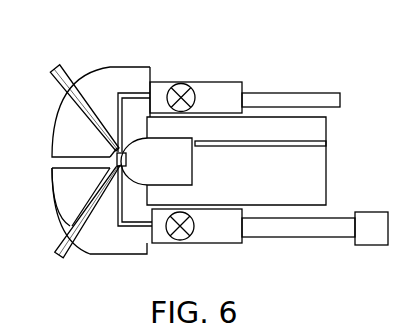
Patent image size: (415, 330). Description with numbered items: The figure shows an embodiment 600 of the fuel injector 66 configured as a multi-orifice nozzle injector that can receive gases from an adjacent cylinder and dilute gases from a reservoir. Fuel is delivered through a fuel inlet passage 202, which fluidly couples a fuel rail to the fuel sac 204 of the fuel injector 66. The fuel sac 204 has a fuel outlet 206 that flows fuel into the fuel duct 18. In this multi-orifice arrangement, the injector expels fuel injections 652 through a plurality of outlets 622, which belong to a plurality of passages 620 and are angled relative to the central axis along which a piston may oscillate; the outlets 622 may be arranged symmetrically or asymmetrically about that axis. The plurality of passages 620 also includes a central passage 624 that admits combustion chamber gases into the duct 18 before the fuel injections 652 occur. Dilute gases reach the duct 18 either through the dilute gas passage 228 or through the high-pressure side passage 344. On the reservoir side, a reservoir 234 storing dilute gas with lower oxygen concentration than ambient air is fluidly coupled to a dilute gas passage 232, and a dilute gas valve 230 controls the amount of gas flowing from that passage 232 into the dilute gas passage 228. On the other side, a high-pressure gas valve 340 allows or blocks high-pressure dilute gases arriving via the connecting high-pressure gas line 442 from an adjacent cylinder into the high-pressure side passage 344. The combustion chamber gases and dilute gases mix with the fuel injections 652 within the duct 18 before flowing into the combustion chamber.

The embodiment 600 is at (292, 31).
The fuel duct 18 is at (150, 71).
The high-pressure side passage 344 is at (127, 91).
The dilute gas passage 228 is at (137, 227).
The plurality of passages 620 is at (53, 276).
The plurality of outlets 622 is at (62, 102).
The central passage 624 is at (70, 170).
The fuel injections 652 is at (62, 64).
The fuel sac 204 is at (193, 151).
The fuel outlet 206 is at (124, 160).
The fuel injector 66 is at (327, 194).
The fuel inlet passage 202 is at (316, 144).
The high-pressure gas valve 340 is at (181, 83).
The connecting high-pressure gas line 442 is at (318, 92).
The dilute gas valve 230 is at (180, 243).
The dilute gas passage 232 is at (272, 238).
The reservoir 234 is at (371, 246).